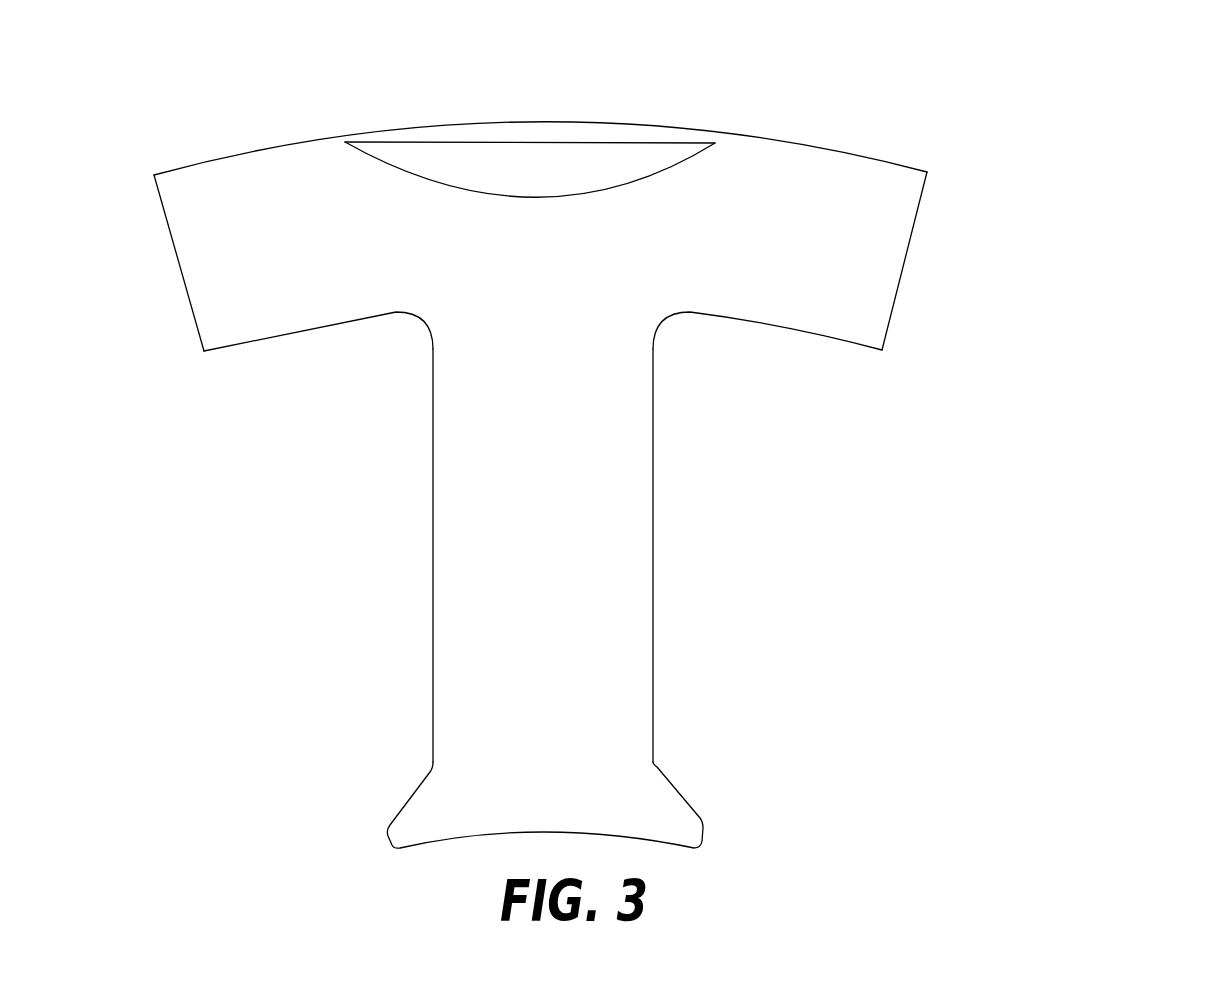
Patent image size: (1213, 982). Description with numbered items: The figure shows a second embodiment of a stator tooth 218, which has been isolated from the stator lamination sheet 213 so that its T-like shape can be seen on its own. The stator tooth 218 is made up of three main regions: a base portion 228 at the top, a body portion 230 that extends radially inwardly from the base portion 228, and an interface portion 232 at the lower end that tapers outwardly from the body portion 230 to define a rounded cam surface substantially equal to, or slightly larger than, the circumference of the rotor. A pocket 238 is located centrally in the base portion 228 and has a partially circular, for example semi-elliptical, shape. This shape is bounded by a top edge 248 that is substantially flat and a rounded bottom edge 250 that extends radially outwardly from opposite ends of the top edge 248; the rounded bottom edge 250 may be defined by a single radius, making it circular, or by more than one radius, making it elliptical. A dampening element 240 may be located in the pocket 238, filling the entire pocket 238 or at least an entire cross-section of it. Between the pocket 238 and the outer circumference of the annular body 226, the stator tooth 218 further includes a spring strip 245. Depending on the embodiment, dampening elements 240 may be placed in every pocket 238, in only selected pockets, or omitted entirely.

The stator lamination sheet 213 is at (917, 167).
The stator tooth 218 is at (1105, 93).
The annular body 226 is at (918, 235).
The base portion 228 is at (760, 200).
The body portion 230 is at (623, 522).
The interface portion 232 is at (625, 793).
The pocket 238 is at (360, 149).
The dampening element 240 is at (400, 158).
The spring strip 245 is at (485, 132).
The top edge 248 is at (537, 141).
The rounded bottom edge 250 is at (600, 190).